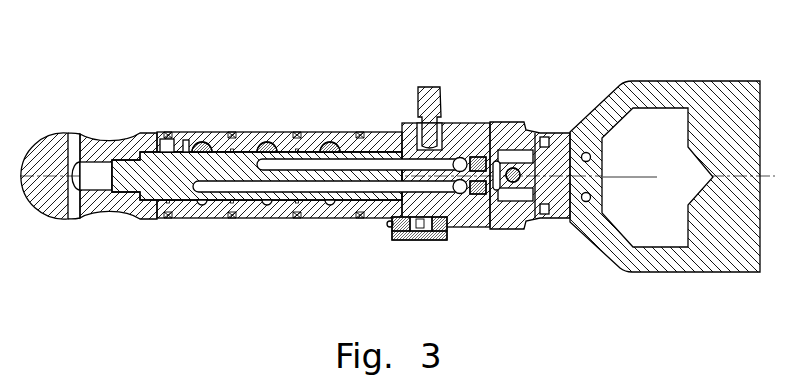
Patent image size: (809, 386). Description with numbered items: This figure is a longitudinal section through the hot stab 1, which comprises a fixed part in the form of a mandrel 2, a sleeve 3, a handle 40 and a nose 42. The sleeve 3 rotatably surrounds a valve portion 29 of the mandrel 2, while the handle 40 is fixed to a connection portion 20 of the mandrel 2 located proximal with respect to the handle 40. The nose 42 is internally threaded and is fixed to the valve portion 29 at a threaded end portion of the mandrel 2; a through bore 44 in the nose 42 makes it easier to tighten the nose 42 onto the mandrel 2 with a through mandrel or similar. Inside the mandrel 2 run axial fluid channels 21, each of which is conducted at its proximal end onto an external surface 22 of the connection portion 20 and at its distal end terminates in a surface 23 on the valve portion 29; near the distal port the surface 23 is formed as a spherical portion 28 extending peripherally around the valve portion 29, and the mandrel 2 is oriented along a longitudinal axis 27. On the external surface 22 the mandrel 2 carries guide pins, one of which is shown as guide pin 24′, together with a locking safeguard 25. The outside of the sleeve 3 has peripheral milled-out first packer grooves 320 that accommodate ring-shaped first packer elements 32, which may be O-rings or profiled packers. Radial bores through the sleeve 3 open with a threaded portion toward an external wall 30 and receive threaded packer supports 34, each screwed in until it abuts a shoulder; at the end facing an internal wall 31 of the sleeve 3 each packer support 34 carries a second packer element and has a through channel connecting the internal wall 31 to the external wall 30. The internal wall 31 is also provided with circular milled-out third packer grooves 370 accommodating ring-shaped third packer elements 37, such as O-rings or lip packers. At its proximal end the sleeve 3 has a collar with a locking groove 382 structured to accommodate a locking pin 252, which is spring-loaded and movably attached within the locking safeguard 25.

The hot stab 1 is at (87, 100).
The mandrel 2 is at (457, 230).
The sleeve 3 is at (187, 219).
The connection portion 20 is at (606, 162).
The fluid channel 21 is at (452, 158).
The external surface 22 is at (484, 232).
The surface 23 is at (372, 140).
The positioning tab 24′ is at (441, 89).
The locking safeguard 25 is at (433, 242).
The longitudinal axis 27 is at (628, 175).
The spherical portion 28 is at (323, 160).
The valve portion 29 is at (337, 121).
The external wall 30 is at (201, 219).
The internal wall 31 is at (165, 149).
The first packer element 32 is at (236, 219).
The packer support 34 is at (272, 142).
The third packer element 37 is at (172, 150).
The handle 40 is at (665, 184).
The nose 42 is at (47, 219).
The through bore 44 is at (73, 219).
The locking pin 252 is at (393, 242).
The first packer groove 320 is at (297, 219).
The third packer groove 370 is at (187, 146).
The locking groove 382 is at (388, 227).